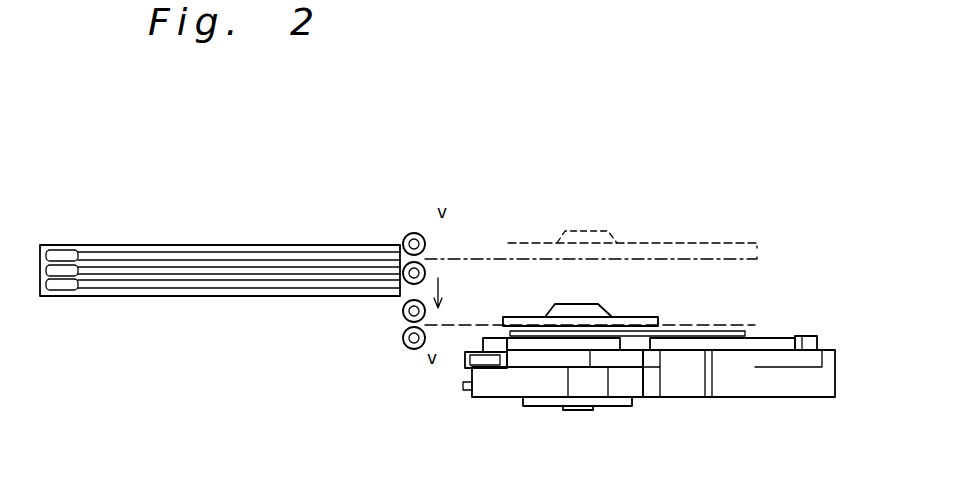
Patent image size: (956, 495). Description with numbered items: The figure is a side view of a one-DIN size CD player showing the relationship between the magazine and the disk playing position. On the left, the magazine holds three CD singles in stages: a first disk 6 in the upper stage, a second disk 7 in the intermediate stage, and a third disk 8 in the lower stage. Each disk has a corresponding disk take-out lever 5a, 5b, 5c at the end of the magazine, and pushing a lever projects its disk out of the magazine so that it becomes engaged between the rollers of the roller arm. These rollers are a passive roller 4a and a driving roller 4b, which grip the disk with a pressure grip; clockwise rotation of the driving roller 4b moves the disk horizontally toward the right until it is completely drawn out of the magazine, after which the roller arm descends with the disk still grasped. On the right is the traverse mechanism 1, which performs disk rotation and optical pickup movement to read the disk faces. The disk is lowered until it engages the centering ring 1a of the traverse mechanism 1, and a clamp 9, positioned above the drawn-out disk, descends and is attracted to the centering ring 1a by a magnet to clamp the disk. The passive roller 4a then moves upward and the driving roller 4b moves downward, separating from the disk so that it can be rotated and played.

The traverse mechanism 1 is at (492, 382).
The centering ring 1a is at (578, 320).
The passive roller 4a is at (414, 236).
The driving roller 4b is at (428, 272).
The disk take-out lever 5a is at (62, 250).
The disk take-out lever 5b is at (80, 266).
The disk take-out lever 5c is at (63, 290).
The first disk 6 is at (182, 255).
The second disk 7 is at (237, 273).
The third disk 8 is at (288, 292).
The clamp 9 is at (603, 308).